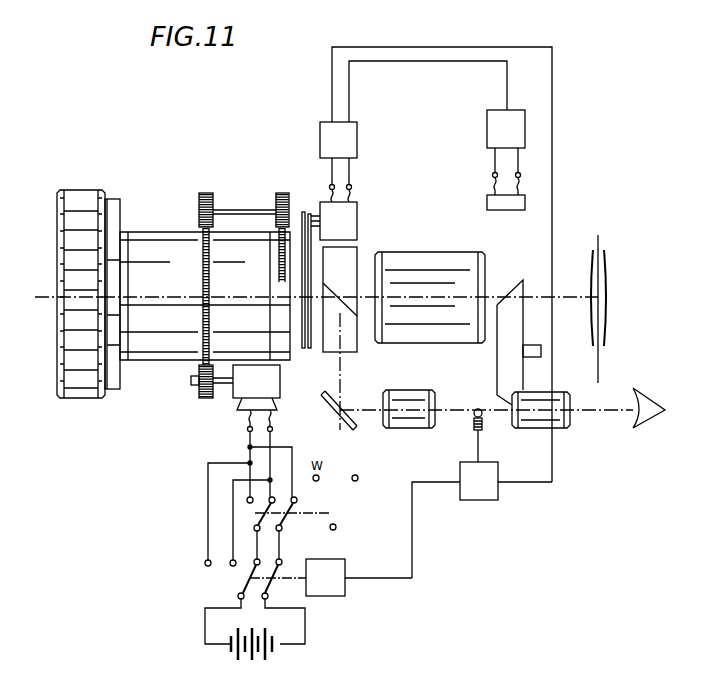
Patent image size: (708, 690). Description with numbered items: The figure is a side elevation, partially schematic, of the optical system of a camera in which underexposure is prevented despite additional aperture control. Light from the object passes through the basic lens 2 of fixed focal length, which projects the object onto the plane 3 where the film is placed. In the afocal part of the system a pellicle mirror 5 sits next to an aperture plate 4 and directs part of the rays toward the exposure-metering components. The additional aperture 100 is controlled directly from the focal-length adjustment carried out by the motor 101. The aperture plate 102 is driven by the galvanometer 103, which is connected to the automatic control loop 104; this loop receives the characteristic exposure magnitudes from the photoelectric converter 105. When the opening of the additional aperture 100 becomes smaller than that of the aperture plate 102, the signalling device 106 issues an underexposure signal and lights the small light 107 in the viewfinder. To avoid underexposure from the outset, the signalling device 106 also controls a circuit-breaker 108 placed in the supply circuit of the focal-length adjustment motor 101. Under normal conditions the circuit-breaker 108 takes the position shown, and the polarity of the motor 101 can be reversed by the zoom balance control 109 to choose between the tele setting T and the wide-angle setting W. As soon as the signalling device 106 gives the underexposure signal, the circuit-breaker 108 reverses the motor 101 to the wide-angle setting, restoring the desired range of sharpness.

The basic lens 2 is at (422, 288).
The plane 3 is at (600, 238).
The aperture plate 4 is at (306, 357).
The pellicle mirror 5 is at (512, 295).
The additional aperture 100 is at (282, 340).
The motor 101 is at (256, 398).
The aperture plate 102 is at (303, 184).
The galvanometer 103 is at (338, 199).
The automatic control loop 104 is at (436, 264).
The photoelectric converter 105 is at (482, 172).
The signalling device 106 is at (482, 520).
The small light 107 is at (470, 411).
The circuit-breaker 108 is at (359, 577).
The zoom balance control 109 is at (351, 492).